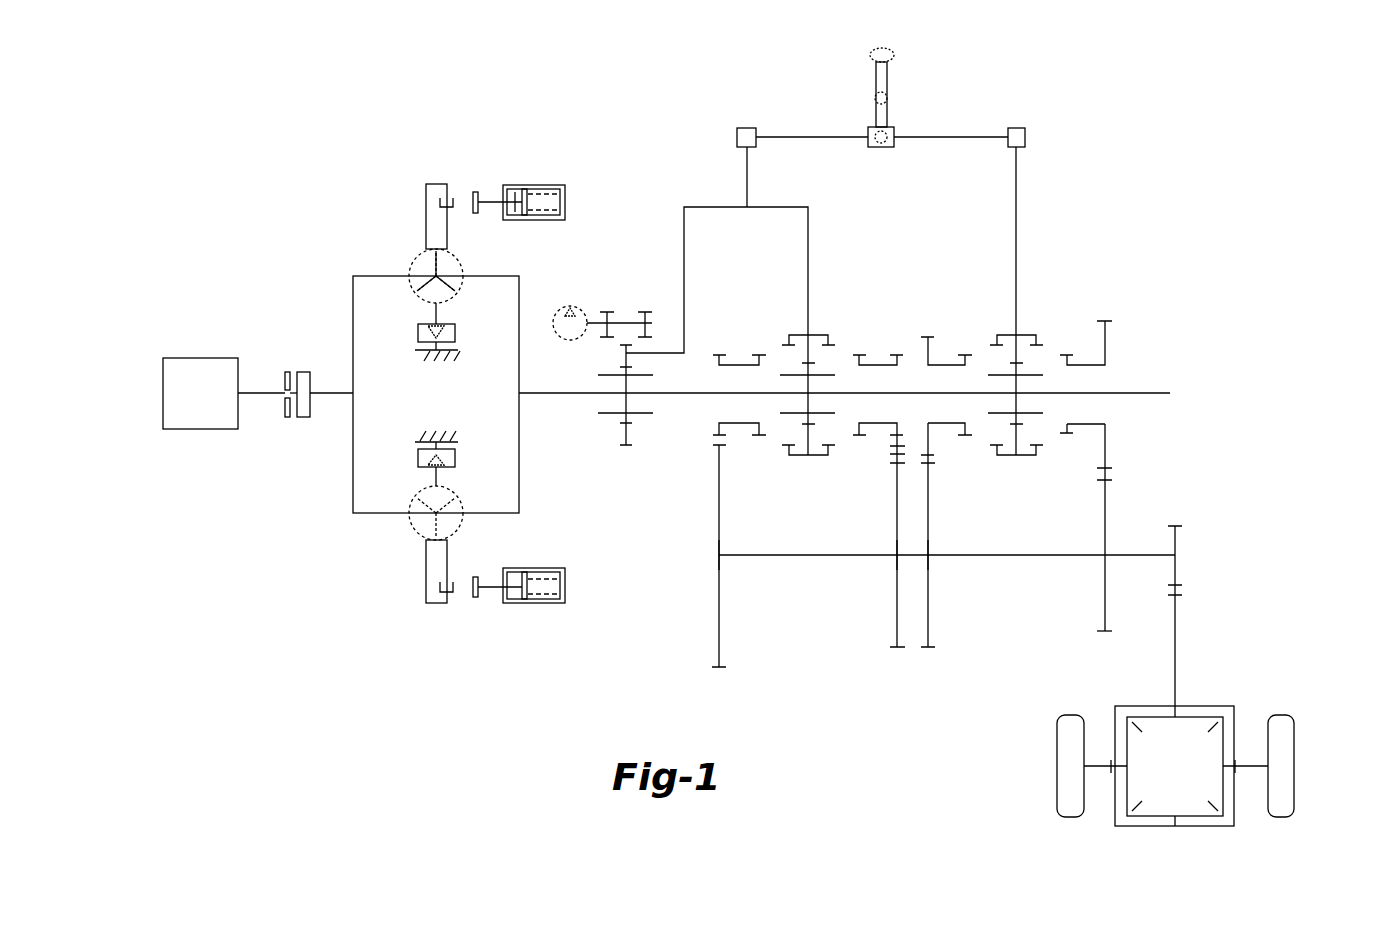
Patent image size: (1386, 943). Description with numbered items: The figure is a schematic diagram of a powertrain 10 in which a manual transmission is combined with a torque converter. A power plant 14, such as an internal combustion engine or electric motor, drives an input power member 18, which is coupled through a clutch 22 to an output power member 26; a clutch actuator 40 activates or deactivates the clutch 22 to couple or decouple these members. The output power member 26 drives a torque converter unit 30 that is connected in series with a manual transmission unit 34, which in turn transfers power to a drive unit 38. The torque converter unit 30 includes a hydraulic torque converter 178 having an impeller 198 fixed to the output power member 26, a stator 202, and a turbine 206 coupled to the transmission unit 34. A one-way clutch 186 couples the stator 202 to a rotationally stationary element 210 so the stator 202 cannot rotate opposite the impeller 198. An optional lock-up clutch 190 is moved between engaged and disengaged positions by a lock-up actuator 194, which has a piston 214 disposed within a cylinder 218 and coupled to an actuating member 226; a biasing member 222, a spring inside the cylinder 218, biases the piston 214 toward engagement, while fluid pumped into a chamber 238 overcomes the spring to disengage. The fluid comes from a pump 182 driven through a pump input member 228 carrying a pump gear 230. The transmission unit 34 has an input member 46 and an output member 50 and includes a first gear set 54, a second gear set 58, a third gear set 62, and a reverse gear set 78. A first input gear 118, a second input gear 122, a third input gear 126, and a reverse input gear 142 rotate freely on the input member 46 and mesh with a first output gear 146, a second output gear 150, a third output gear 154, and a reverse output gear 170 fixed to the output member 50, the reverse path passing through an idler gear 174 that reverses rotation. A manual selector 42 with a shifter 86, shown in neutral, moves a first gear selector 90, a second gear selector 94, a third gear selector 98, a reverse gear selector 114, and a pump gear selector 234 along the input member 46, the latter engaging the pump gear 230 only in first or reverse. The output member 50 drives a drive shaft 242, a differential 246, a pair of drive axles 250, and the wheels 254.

The powertrain 10 is at (253, 133).
The power plant 14 is at (200, 358).
The input power member 18 is at (258, 395).
The clutch 22 is at (303, 372).
The output power member 26 is at (323, 395).
The torque converter unit 30 is at (365, 647).
The manual transmission unit 34 is at (825, 251).
The drive unit 38 is at (1178, 781).
The clutch actuator 40 is at (285, 380).
The manual selector 42 is at (881, 191).
The input member 46 is at (1168, 390).
The output member 50 is at (1140, 552).
The first gear set 54 is at (720, 672).
The second gear set 58 is at (930, 655).
The third gear set 62 is at (1098, 633).
The reverse gear set 78 is at (895, 655).
The shifter 86 is at (872, 58).
The first gear selector 90 is at (800, 333).
The second gear selector 94 is at (1006, 333).
The third gear selector 98 is at (1024, 333).
The reverse gear selector 114 is at (816, 333).
The first input gear 118 is at (740, 362).
The second input gear 122 is at (947, 425).
The third input gear 126 is at (1107, 333).
The reverse input gear 142 is at (878, 360).
The first output gear 146 is at (717, 608).
The second output gear 150 is at (930, 600).
The third output gear 154 is at (1104, 598).
The reverse output gear 170 is at (896, 600).
The idler gear 174 is at (890, 446).
The hydraulic torque converter 178 is at (418, 240).
The pump 182 is at (565, 305).
The one-way clutch 186 is at (458, 333).
The lock-up clutch 190 is at (440, 184).
The lock-up actuator 194 is at (533, 351).
The impeller 198 is at (414, 265).
The stator 202 is at (425, 300).
The turbine 206 is at (458, 262).
The rotationally stationary element 210 is at (460, 352).
The piston 214 is at (525, 189).
The cylinder 218 is at (506, 190).
The biasing member 222 is at (548, 192).
The actuating member 226 is at (475, 192).
The pump input member 228 is at (606, 312).
The pump gear 230 is at (643, 312).
The pump gear selector 234 is at (620, 353).
The chamber 238 is at (515, 192).
The drive shaft 242 is at (1178, 635).
The differential 246 is at (1150, 827).
The drive axles 250 is at (1108, 758).
The wheels 254 is at (1055, 767).